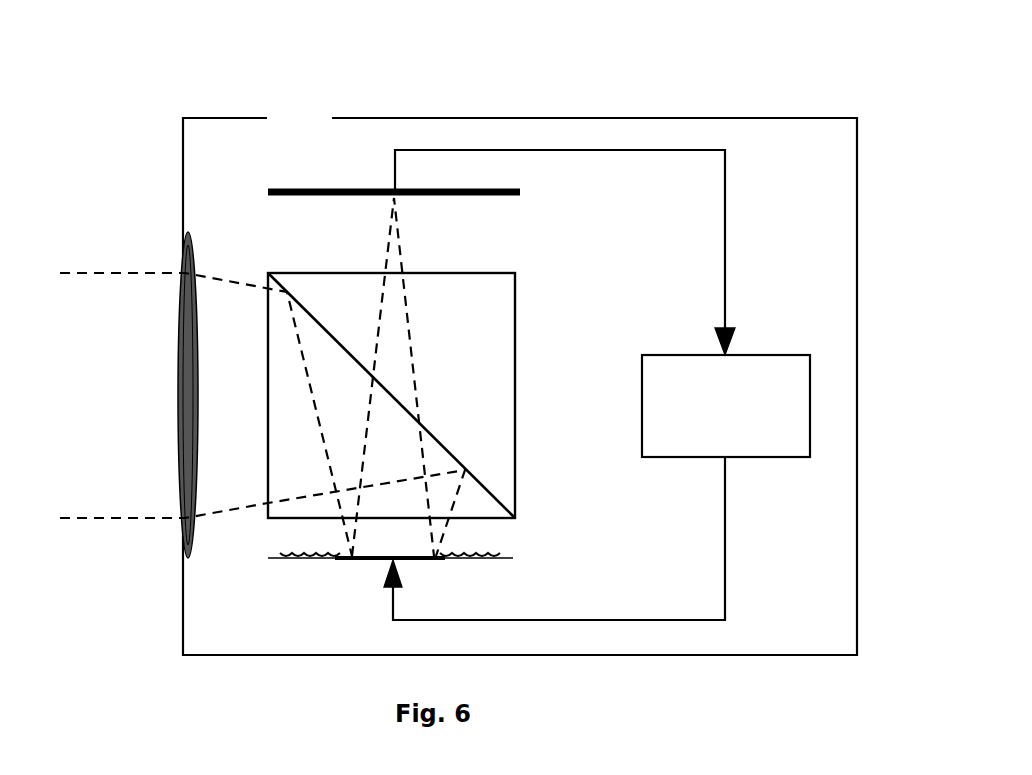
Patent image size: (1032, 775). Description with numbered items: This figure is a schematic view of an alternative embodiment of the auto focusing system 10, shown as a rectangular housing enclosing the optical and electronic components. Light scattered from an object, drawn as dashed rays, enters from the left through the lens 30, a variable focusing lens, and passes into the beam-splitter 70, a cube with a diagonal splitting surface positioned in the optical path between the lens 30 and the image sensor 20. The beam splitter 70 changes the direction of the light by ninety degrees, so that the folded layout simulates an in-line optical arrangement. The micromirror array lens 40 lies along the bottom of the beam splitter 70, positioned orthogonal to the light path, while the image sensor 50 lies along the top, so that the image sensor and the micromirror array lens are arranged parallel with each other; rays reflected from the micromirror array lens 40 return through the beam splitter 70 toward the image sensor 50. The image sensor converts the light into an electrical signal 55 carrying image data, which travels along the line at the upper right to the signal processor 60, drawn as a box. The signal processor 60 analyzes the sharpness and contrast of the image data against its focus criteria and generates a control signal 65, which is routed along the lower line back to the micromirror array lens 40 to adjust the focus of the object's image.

The auto focusing system 10 is at (245, 118).
The image sensor 20 is at (600, 385).
The lens 30 is at (183, 540).
The micromirror array lens 40 is at (326, 559).
The image sensor 50 is at (345, 190).
The electrical signal 55 is at (730, 262).
The signal processor 60 is at (642, 380).
The control signal 65 is at (660, 618).
The beam-splitter 70 is at (505, 272).